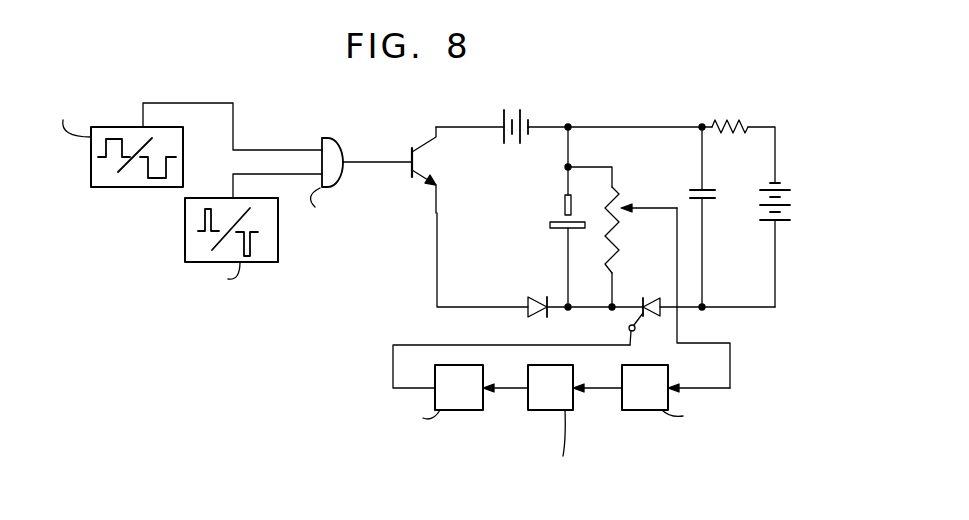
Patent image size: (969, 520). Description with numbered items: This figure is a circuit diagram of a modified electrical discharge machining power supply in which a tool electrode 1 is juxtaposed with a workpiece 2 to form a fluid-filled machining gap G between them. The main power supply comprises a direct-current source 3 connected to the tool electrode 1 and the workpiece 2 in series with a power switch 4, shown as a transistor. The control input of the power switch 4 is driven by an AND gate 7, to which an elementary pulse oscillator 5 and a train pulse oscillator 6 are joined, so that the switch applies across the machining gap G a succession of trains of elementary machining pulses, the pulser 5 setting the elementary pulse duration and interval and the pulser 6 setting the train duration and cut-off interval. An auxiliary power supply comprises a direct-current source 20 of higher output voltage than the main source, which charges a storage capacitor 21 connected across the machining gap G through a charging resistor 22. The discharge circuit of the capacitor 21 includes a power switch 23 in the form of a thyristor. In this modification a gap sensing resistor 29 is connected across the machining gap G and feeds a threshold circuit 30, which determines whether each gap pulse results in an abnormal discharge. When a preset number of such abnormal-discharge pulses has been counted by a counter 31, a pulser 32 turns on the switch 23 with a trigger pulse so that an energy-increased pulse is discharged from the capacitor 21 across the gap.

The tool electrode 1 is at (563, 200).
The workpiece 2 is at (561, 231).
The machining gap G is at (563, 222).
The direct-current power source 3 is at (517, 110).
The power switch 4 is at (425, 165).
The elementary pulse oscillator 5 is at (252, 262).
The train pulse oscillator 6 is at (122, 187).
The AND gate 7 is at (337, 138).
The direct-current source 20 is at (768, 197).
The storage capacitor 21 is at (690, 192).
The charging resistor 22 is at (733, 119).
The power switch 23 is at (648, 318).
The gap sensing resistor 29 is at (620, 246).
The threshold circuit 30 is at (640, 410).
The counter 31 is at (545, 410).
The pulser 32 is at (455, 410).